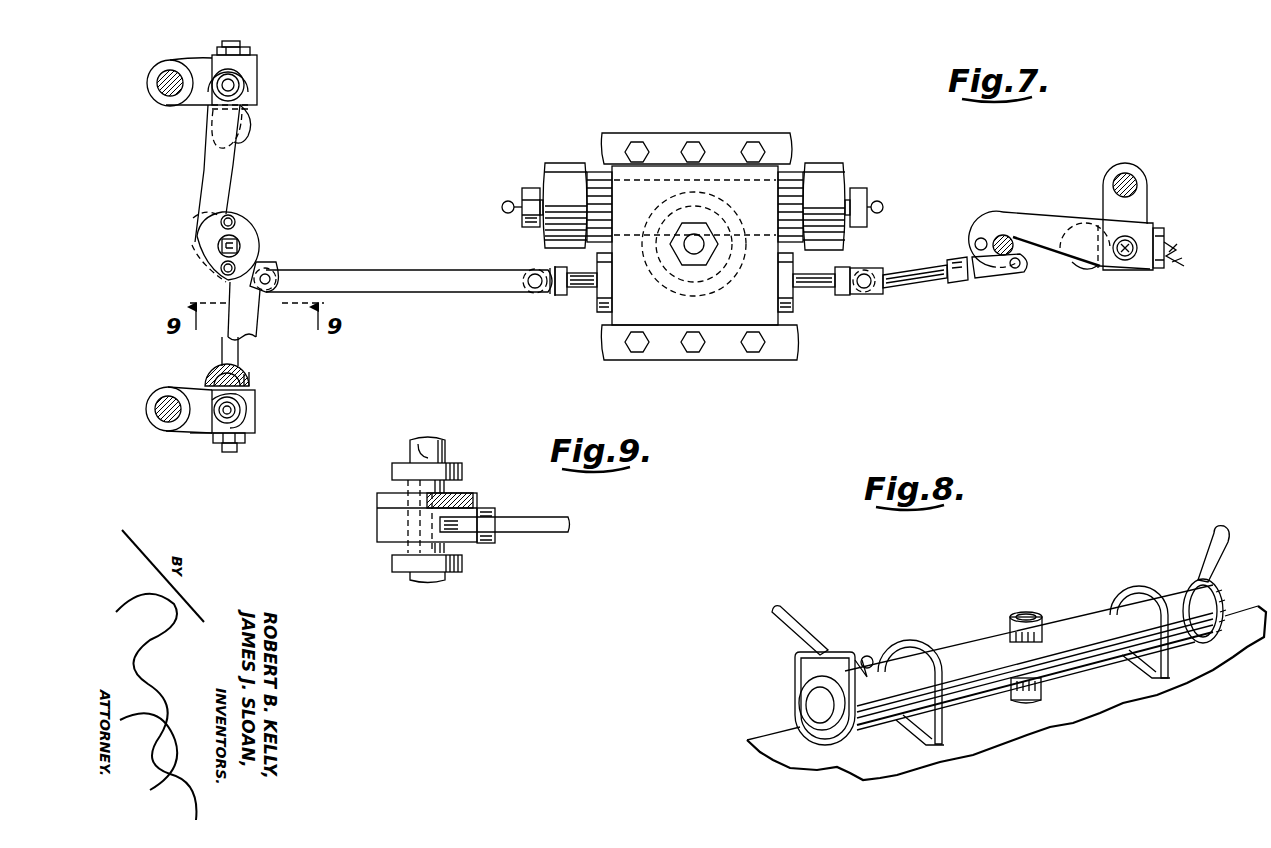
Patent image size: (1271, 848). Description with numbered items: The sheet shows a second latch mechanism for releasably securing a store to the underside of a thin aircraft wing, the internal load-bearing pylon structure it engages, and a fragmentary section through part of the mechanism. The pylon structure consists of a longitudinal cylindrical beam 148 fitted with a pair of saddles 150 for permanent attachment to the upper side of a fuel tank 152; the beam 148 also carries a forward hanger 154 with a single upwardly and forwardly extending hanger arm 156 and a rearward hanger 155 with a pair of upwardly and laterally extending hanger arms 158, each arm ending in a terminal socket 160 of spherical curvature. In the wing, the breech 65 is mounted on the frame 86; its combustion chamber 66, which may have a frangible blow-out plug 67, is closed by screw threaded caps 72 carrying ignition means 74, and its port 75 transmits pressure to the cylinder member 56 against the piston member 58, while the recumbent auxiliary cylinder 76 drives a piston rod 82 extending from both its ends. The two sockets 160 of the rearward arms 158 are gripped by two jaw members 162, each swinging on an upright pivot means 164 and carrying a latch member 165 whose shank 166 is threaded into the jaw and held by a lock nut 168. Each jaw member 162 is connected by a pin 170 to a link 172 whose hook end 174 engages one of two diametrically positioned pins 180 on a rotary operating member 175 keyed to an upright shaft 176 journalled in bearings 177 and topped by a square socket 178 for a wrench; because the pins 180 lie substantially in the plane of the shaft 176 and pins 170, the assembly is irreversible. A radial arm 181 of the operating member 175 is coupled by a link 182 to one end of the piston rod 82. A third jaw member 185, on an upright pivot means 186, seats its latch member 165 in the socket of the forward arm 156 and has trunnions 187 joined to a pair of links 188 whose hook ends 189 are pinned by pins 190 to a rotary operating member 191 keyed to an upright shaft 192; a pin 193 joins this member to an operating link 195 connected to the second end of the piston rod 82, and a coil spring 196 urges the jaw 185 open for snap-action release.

In FIG. 8, the cylinder member 56 is at (1040, 616).
In FIG. 8, the piston member 58 is at (1032, 702).
In FIG. 7, the breech 65 is at (856, 166).
In FIG. 7, the combustion chamber 66 is at (786, 180).
In FIG. 7, the frangible blow-out plug 67 is at (676, 253).
In FIG. 7, the screw threaded caps 72 is at (562, 170).
In FIG. 7, the ignition means 74 is at (508, 213).
In FIG. 7, the port 75 is at (694, 144).
In FIG. 7, the auxiliary cylinder 76 is at (800, 305).
In FIG. 7, the piston rod 82 is at (582, 294).
In FIG. 7, the frame 86 is at (726, 138).
In FIG. 8, the longitudinal cylindrical beam 148 is at (976, 650).
In FIG. 8, the saddles 150 is at (910, 648).
In FIG. 8, the fuel tank 152 is at (1010, 728).
In FIG. 8, the forward hanger 154 is at (1216, 566).
In FIG. 8, the rearward hanger 155 is at (796, 668).
In FIG. 7, the hanger arm 156 is at (1088, 270).
In FIG. 8, the hanger arm 156 is at (1218, 528).
In FIG. 7, the hanger arms 158 is at (250, 133).
In FIG. 8, the hanger arms 158 is at (788, 610).
In FIG. 7, the terminal socket 160 is at (252, 381).
In FIG. 7, the jaw members 162 is at (186, 424).
In FIG. 7, the upright pivot means 164 is at (172, 97).
In FIG. 7, the latch member 165 is at (250, 117).
In FIG. 7, the shank 166 is at (241, 43).
In FIG. 7, the lock nut 168 is at (217, 51).
In FIG. 7, the pin 170 is at (245, 87).
In FIG. 7, the link 172 is at (204, 190).
In FIG. 7, the hook end 174 is at (251, 228).
In FIG. 9, the hook end 174 is at (378, 500).
In FIG. 7, the rotary operating member 175 is at (200, 221).
In FIG. 9, the rotary operating member 175 is at (380, 525).
In FIG. 7, the upright shaft 176 is at (242, 236).
In FIG. 9, the upright shaft 176 is at (447, 449).
In FIG. 9, the bearings 177 is at (464, 472).
In FIG. 7, the square socket 178 is at (240, 243).
In FIG. 7, the pins 180 is at (231, 215).
In FIG. 7, the radial arm 181 is at (280, 262).
In FIG. 9, the radial arm 181 is at (470, 546).
In FIG. 7, the link 182 is at (430, 268).
In FIG. 9, the link 182 is at (540, 533).
In FIG. 7, the third jaw member 185 is at (1108, 199).
In FIG. 7, the upright pivot means 186 is at (1139, 182).
In FIG. 7, the trunnions 187 is at (1127, 261).
In FIG. 7, the links 188 is at (1028, 216).
In FIG. 7, the hook ends 189 is at (992, 214).
In FIG. 7, the pins 190 is at (974, 246).
In FIG. 7, the rotary operating member 191 is at (1012, 275).
In FIG. 7, the upright shaft 192 is at (1000, 257).
In FIG. 7, the pin 193 is at (1022, 268).
In FIG. 7, the operating link 195 is at (910, 290).
In FIG. 7, the coil spring 196 is at (1170, 266).